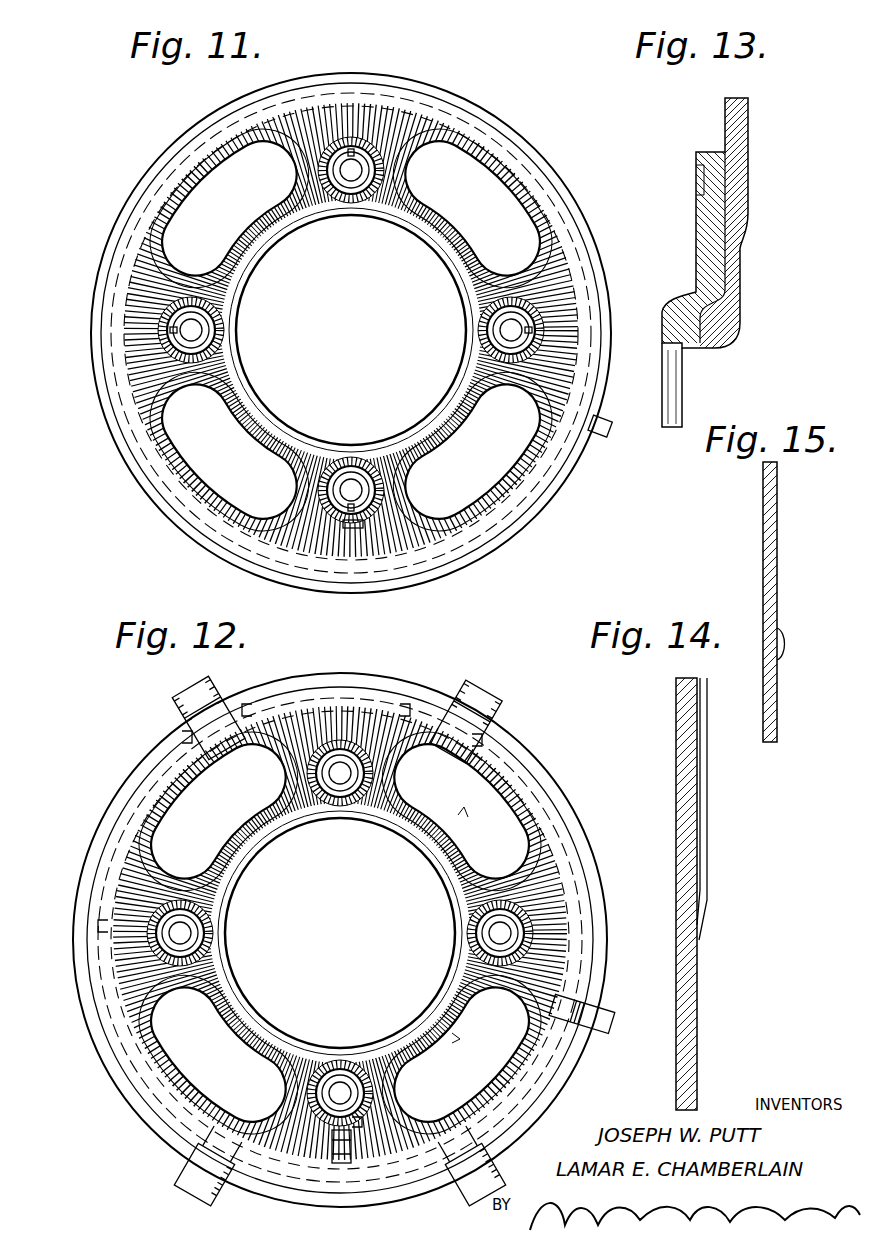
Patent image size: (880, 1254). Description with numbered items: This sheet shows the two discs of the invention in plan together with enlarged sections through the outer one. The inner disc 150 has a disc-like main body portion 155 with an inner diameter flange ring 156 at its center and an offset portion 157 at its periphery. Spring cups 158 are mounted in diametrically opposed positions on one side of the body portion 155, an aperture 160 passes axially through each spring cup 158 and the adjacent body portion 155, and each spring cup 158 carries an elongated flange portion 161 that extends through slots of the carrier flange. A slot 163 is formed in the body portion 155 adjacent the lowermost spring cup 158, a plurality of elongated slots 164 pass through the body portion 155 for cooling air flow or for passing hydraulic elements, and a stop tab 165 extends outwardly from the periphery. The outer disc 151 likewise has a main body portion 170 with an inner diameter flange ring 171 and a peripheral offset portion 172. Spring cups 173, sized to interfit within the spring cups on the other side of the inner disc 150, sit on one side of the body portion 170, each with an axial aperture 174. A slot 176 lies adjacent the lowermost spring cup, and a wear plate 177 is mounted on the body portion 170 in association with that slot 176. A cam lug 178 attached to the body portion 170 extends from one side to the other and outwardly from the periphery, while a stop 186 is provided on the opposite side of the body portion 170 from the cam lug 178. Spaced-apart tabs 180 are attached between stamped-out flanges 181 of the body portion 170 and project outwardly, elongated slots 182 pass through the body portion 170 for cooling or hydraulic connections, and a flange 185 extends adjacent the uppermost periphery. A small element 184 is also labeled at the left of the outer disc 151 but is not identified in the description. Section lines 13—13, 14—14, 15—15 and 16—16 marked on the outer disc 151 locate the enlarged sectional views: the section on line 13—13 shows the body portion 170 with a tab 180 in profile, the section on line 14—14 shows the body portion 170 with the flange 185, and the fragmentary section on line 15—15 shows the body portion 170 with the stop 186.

In FIG. 11, the inner disc 150 is at (351, 333).
In FIG. 12, the outer disc 151 is at (340, 940).
In FIG. 11, the main body portion 155 is at (351, 287).
In FIG. 11, the inner diameter flange ring 156 is at (351, 330).
In FIG. 11, the offset portion 157 is at (356, 333).
In FIG. 11, the spring cups 158 is at (351, 330).
In FIG. 11, the aperture 160 is at (351, 330).
In FIG. 11, the elongated flange portion 161 is at (350, 319).
In FIG. 11, the slot 163 is at (378, 530).
In FIG. 11, the elongated slots 164 is at (351, 330).
In FIG. 11, the stop tab 165 is at (616, 437).
In FIG. 12, the main body portion 170 is at (401, 933).
In FIG. 13, the main body portion 170 is at (705, 207).
In FIG. 14, the main body portion 170 is at (698, 1022).
In FIG. 15, the main body portion 170 is at (778, 542).
In FIG. 12, the inner diameter flange ring 171 is at (340, 933).
In FIG. 12, the offset portion 172 is at (358, 940).
In FIG. 12, the spring cups 173 is at (340, 933).
In FIG. 12, the aperture 174 is at (340, 933).
In FIG. 12, the slot 176 is at (378, 1127).
In FIG. 12, the wear plate 177 is at (320, 1151).
In FIG. 12, the cam lug 178 is at (599, 1007).
In FIG. 12, the tabs 180 is at (356, 935).
In FIG. 13, the tabs 180 is at (750, 118).
In FIG. 12, the stamped-out flanges 181 is at (343, 728).
In FIG. 12, the elongated slots 182 is at (424, 925).
In FIG. 13, the elongated slots 182 is at (663, 372).
In FIG. 12, the clip 184 is at (95, 927).
In FIG. 12, the flange 185 is at (340, 908).
In FIG. 14, the flange 185 is at (707, 768).
In FIG. 15, the stop 186 is at (787, 643).
In FIG. 12, the section line 13— 13 is at (438, 697).
In FIG. 12, the section line 14— 14 is at (95, 787).
In FIG. 12, the section line 15— 15 is at (69, 967).
In FIG. 12, the section line 16— 16 is at (485, 1170).